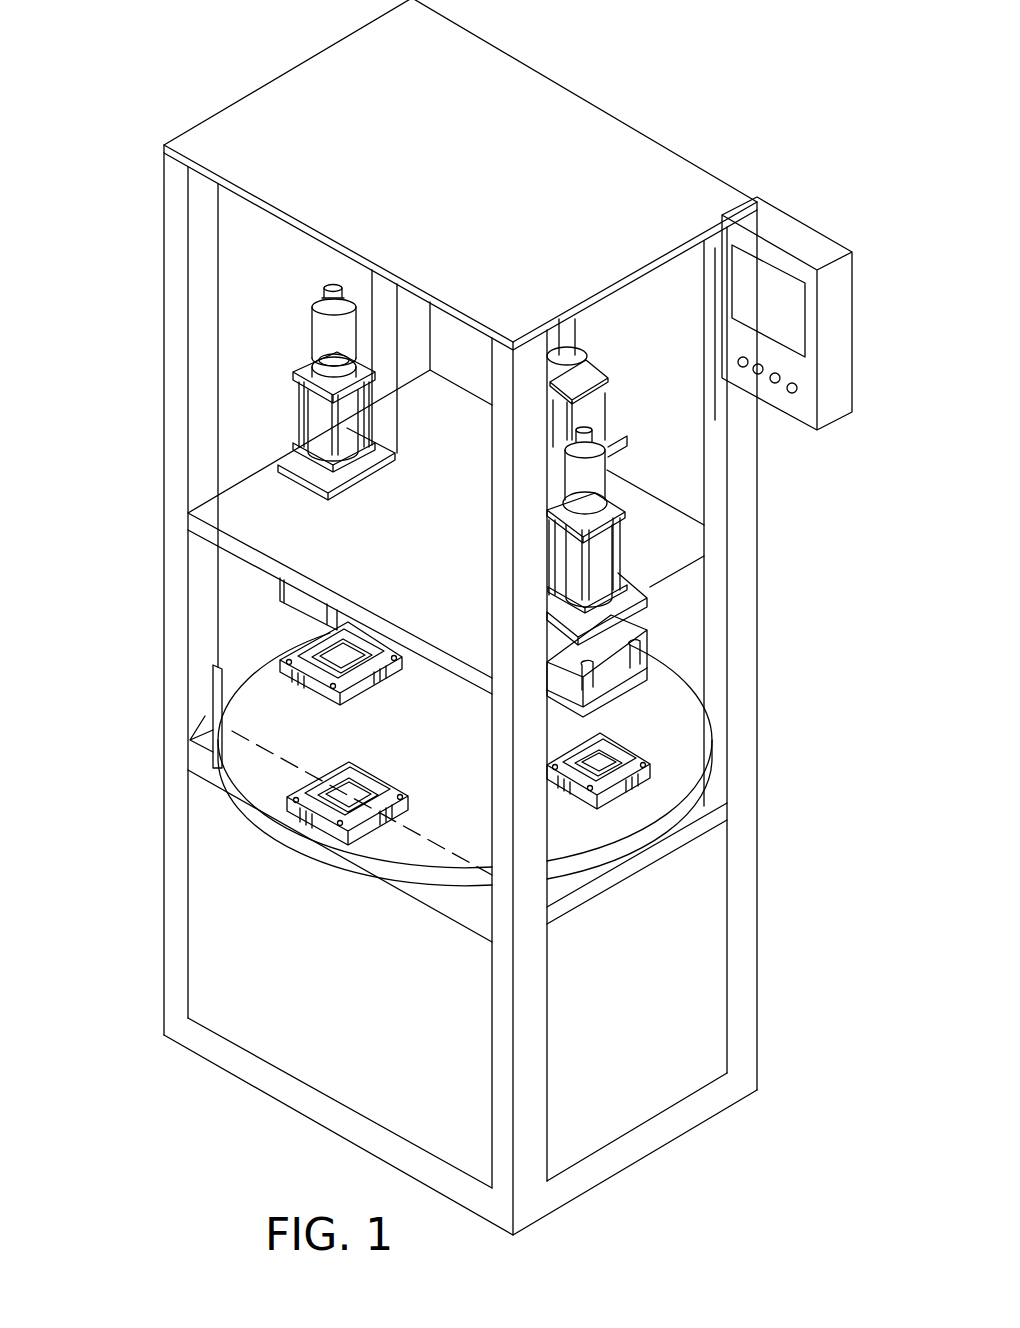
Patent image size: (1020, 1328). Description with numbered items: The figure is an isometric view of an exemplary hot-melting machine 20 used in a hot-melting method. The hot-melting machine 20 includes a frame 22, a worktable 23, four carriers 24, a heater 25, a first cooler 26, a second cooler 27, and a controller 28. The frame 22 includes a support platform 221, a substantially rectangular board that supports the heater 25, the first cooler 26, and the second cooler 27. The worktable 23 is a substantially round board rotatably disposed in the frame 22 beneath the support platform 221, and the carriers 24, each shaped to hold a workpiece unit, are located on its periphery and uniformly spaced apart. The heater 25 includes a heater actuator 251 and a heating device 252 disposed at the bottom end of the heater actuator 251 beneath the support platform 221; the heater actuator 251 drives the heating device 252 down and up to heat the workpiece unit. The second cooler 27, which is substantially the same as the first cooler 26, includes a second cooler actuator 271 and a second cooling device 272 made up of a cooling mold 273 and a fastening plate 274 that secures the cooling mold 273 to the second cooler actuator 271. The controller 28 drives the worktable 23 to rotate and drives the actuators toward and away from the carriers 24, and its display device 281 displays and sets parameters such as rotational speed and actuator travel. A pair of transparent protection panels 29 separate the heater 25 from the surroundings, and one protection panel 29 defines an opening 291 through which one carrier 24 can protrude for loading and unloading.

The hot-melting machine 20 is at (554, 52).
The frame 22 is at (178, 622).
The support platform 221 is at (238, 512).
The worktable 23 is at (257, 783).
The carrier 24 is at (356, 805).
The heater 25 is at (230, 387).
The heater actuator 251 is at (325, 413).
The heating device 252 is at (280, 602).
The first cooler 26 is at (604, 349).
The second cooler 27 is at (625, 553).
The second cooler actuator 271 is at (652, 622).
The second cooling device 272 is at (728, 712).
The cooling mold 273 is at (643, 700).
The fastening plate 274 is at (647, 688).
The controller 28 is at (793, 304).
The display device 281 is at (775, 283).
The transparent protection panel 29 is at (192, 740).
The opening 291 is at (211, 712).